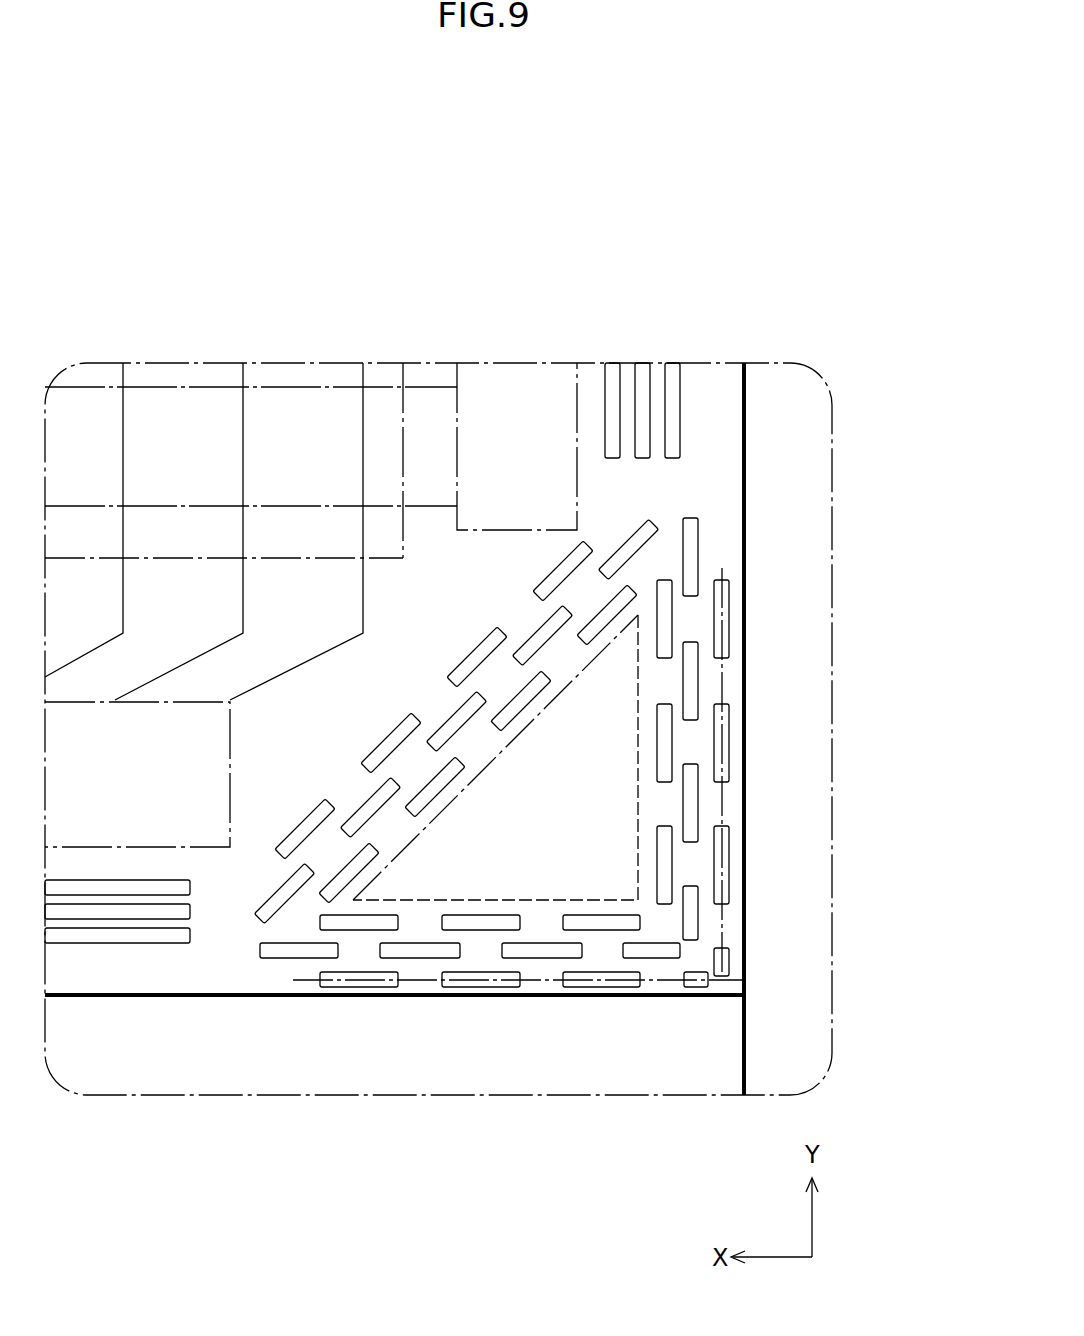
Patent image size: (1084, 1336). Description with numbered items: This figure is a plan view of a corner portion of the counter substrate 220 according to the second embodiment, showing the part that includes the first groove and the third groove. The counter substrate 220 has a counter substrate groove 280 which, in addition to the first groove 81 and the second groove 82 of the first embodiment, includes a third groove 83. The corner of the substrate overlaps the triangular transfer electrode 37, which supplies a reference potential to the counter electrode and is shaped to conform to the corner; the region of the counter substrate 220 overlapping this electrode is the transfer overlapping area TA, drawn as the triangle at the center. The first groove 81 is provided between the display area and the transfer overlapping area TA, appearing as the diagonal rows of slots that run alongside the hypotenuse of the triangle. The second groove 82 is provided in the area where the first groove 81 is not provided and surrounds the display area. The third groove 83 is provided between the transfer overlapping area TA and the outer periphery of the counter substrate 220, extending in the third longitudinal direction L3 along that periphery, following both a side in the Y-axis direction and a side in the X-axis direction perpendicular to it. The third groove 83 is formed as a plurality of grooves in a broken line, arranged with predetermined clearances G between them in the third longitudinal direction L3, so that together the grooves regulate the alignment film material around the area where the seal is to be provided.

The counter substrate 220 is at (705, 390).
The counter substrate groove 280 is at (606, 669).
The second groove 82 is at (672, 438).
The first groove 81 is at (645, 533).
The third groove 83 is at (693, 543).
The transfer overlapping area TA is at (597, 705).
The transfer electrode 37 is at (607, 743).
The predetermined clearance G is at (443, 997).
The third longitudinal direction L3 is at (302, 981).